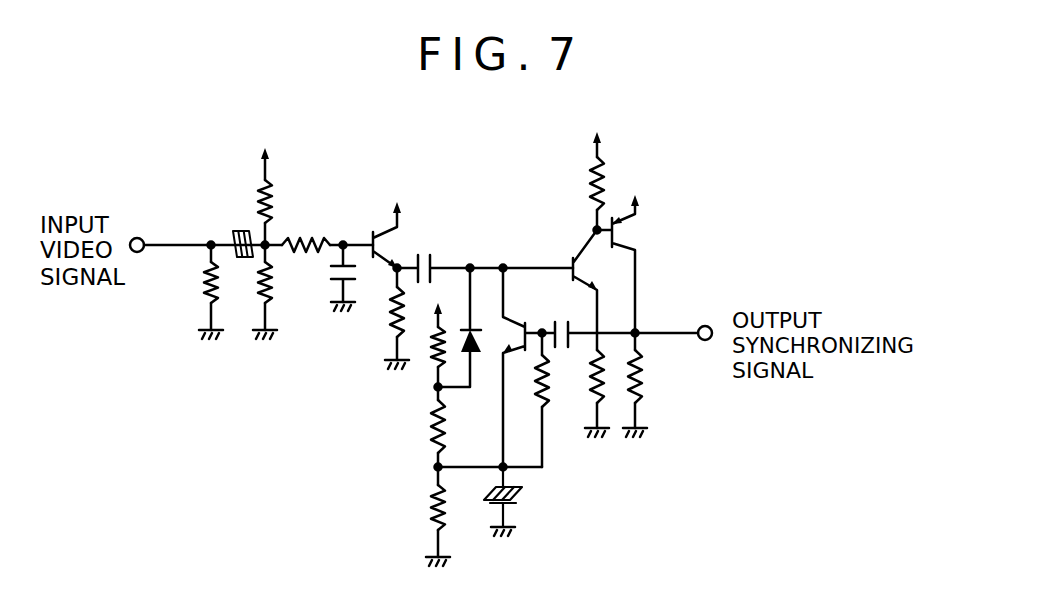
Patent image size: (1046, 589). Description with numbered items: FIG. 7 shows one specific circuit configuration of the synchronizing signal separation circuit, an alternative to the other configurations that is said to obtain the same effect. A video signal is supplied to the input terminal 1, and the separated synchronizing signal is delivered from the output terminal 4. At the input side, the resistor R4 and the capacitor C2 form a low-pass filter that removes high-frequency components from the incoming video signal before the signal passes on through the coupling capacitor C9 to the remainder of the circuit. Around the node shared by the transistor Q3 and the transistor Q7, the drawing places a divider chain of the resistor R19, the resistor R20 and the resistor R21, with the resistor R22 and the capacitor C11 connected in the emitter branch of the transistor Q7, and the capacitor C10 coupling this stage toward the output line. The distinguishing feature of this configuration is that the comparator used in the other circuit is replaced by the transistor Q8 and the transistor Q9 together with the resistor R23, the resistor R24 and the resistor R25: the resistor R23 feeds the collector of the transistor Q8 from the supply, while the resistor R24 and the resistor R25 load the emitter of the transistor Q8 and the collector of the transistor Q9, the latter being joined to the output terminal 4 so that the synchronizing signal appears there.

The input terminal 1 is at (137, 235).
The output terminal 4 is at (705, 325).
The resistor R4 is at (306, 231).
The capacitor C2 is at (323, 278).
The capacitor C9 is at (433, 254).
The transistor Q3 is at (459, 314).
The transistor Q7 is at (516, 354).
The transistor Q8 is at (574, 286).
The transistor Q9 is at (637, 272).
The resistor R19 is at (415, 351).
The resistor R20 is at (463, 442).
The resistor R21 is at (417, 525).
The resistor R22 is at (563, 400).
The resistor R23 is at (568, 181).
The resistor R24 is at (597, 408).
The resistor R25 is at (656, 393).
The capacitor C10 is at (619, 320).
The capacitor C11 is at (527, 500).